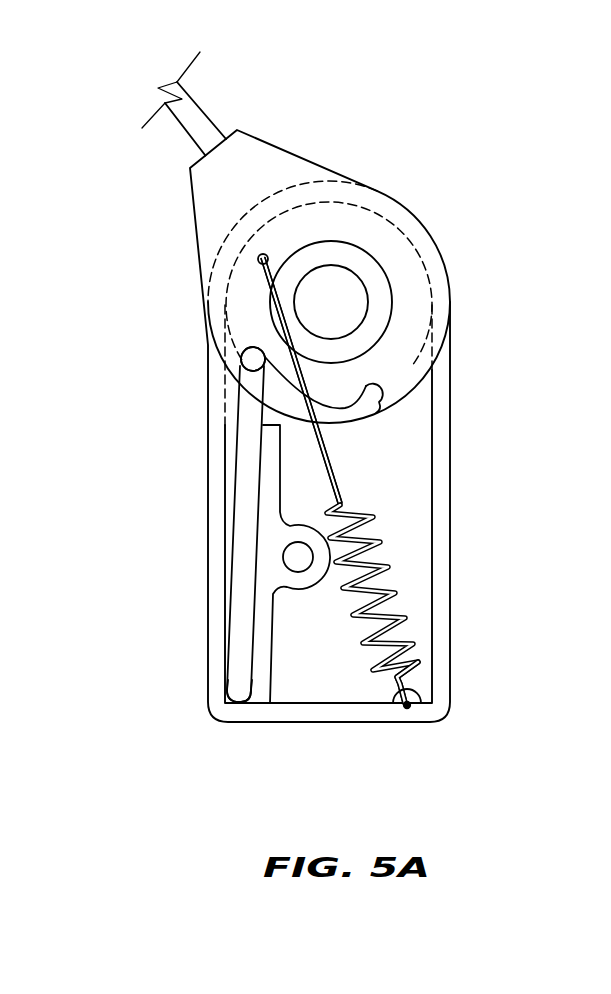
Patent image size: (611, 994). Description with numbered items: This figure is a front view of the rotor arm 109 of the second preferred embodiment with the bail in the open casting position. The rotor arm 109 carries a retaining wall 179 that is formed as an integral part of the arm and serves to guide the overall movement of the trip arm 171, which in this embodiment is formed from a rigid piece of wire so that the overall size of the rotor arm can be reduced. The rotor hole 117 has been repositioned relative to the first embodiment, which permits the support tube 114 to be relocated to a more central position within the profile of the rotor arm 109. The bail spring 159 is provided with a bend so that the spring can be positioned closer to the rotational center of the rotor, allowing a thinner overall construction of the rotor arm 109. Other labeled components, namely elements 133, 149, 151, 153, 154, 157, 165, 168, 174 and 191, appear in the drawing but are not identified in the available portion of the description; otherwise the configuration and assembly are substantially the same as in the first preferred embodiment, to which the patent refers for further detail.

The first rotor arm 109 is at (445, 87).
The support tube 114 is at (293, 583).
The rotor hole 117 is at (407, 709).
The tube 133 is at (211, 126).
The slot end stop 149 is at (363, 388).
The cam follower guide 151 is at (247, 350).
The arcuate slot 153 is at (380, 391).
The link arm 154 is at (266, 256).
The housing 157 is at (257, 163).
The bail spring 159 is at (372, 566).
The spring end hook 165 is at (405, 682).
The link rod 168 is at (340, 477).
The trip arm 171 is at (243, 512).
The roller 174 is at (252, 364).
The retaining wall 179 is at (260, 673).
The cable 191 is at (183, 127).